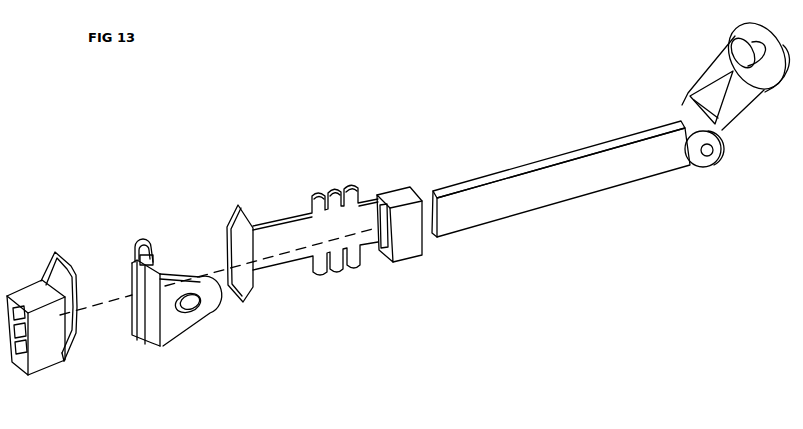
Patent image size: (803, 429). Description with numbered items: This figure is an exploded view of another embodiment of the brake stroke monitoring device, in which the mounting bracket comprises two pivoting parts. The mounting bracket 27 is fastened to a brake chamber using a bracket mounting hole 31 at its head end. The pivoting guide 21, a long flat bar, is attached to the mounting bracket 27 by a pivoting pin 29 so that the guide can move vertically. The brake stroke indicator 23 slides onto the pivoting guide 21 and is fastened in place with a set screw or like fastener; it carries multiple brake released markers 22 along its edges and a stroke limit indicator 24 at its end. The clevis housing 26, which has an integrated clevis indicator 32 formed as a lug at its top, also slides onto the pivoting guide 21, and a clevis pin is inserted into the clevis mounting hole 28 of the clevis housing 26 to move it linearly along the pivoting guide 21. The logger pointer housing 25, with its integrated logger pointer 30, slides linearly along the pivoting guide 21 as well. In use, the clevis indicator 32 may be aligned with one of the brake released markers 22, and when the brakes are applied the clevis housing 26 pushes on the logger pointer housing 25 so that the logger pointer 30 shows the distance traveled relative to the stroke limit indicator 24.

The pivoting guide 21 is at (576, 181).
The brake released markers 22 is at (316, 188).
The brake stroke indicator 23 is at (324, 223).
The stroke limit indicator 24 is at (240, 224).
The logger pointer housing 25 is at (35, 289).
The clevis housing 26 is at (176, 334).
The mounting bracket 27 is at (708, 118).
The clevis mounting hole 28 is at (199, 311).
The pivoting pin 29 is at (707, 157).
The logger pointer 30 is at (56, 252).
The bracket mounting hole 31 is at (742, 53).
The clevis indicator 32 is at (145, 233).